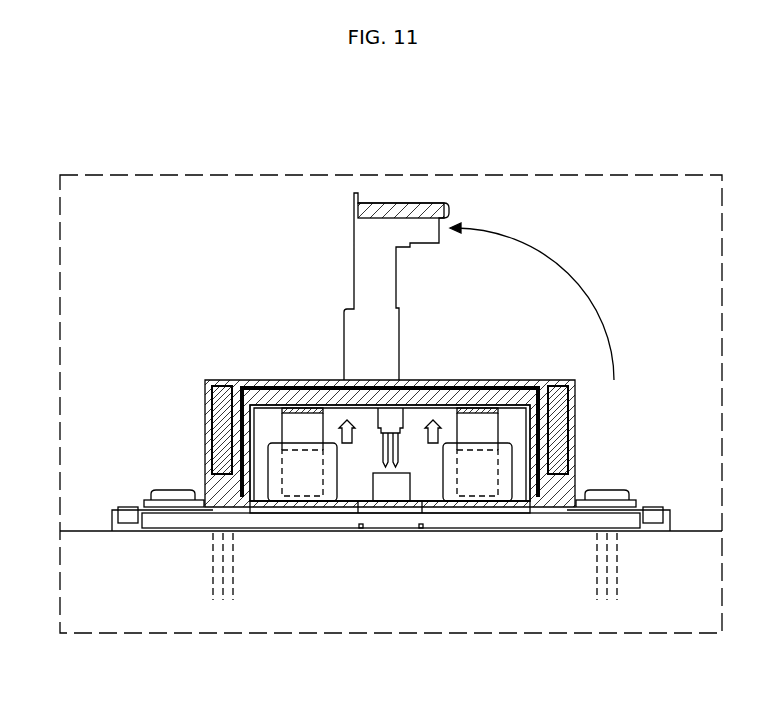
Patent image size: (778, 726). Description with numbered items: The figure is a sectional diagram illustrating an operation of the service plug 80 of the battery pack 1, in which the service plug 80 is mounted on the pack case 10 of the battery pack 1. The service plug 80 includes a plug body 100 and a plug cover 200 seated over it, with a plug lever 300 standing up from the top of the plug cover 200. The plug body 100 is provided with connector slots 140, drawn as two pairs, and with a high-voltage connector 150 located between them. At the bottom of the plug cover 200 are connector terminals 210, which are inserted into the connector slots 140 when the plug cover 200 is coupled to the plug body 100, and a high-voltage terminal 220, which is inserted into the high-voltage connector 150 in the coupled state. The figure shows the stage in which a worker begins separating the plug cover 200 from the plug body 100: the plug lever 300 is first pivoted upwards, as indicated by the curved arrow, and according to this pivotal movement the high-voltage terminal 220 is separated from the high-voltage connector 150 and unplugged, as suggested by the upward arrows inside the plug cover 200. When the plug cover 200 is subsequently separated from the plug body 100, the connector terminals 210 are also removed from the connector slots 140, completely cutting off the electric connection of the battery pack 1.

The battery pack 1 is at (381, 360).
The pack case 10 is at (693, 552).
The service plug 80 is at (391, 429).
The plug body 100 is at (629, 508).
The connector slot 140 is at (278, 497).
The high-voltage connector 150 is at (390, 490).
The plug cover 200 is at (228, 378).
The connector terminal 210 is at (305, 424).
The high-voltage terminal 220 is at (393, 408).
The plug lever 300 is at (401, 210).